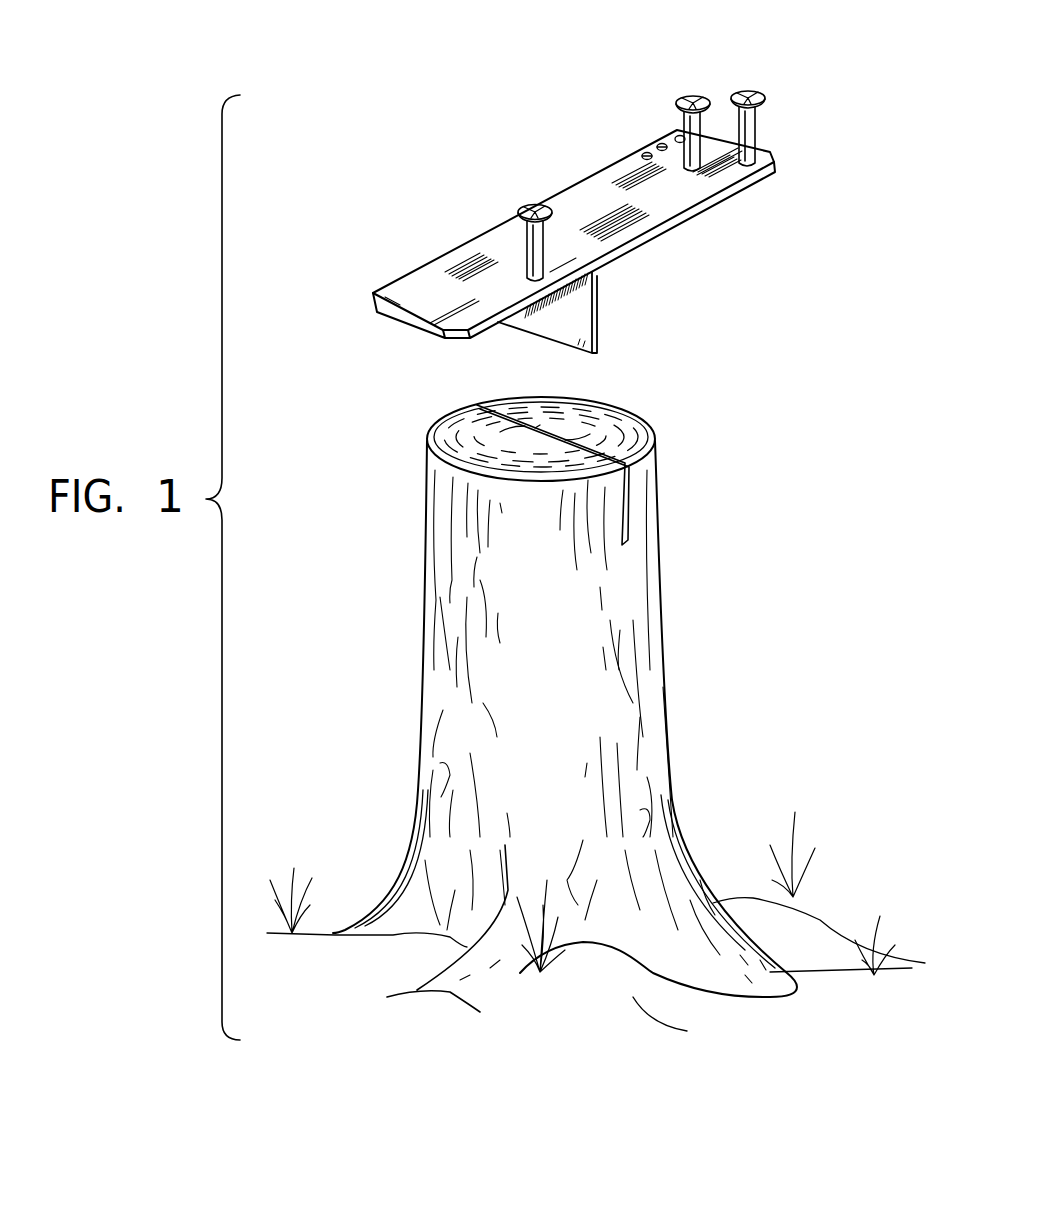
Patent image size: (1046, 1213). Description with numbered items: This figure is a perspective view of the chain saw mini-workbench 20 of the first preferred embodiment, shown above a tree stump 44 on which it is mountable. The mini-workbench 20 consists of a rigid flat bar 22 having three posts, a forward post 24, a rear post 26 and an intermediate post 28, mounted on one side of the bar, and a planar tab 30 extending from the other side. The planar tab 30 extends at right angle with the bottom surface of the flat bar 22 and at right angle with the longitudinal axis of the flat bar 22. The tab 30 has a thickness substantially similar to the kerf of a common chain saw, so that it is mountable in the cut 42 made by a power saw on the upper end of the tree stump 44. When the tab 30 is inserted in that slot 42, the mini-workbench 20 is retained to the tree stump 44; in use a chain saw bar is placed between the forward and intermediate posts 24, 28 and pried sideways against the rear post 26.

The chain saw mini-workbench 20 is at (608, 185).
The rigid flat bar 22 is at (476, 233).
The forward post 24 is at (764, 95).
The rear post 26 is at (532, 204).
The intermediate post 28 is at (694, 93).
The planar tab 30 is at (596, 318).
The cut 42 is at (630, 496).
The tree stump 44 is at (660, 646).